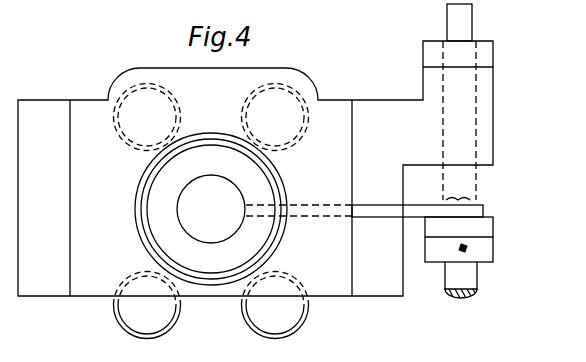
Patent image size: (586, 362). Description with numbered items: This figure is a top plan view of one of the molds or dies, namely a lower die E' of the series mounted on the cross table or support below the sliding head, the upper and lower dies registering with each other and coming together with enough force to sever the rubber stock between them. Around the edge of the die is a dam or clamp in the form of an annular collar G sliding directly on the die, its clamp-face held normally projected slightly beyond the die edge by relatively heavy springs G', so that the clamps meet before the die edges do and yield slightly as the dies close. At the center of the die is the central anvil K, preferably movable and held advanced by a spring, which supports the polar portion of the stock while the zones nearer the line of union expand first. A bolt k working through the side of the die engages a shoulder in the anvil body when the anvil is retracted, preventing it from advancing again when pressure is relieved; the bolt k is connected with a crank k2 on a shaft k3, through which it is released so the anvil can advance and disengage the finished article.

The lower die E' is at (211, 209).
The central anvil K is at (211, 209).
The annular collar G is at (227, 209).
The spring G' is at (284, 309).
The bottom left roller C' is at (147, 316).
The bolt k is at (417, 200).
The shaft k3 is at (474, 182).
The crank k2 is at (480, 229).